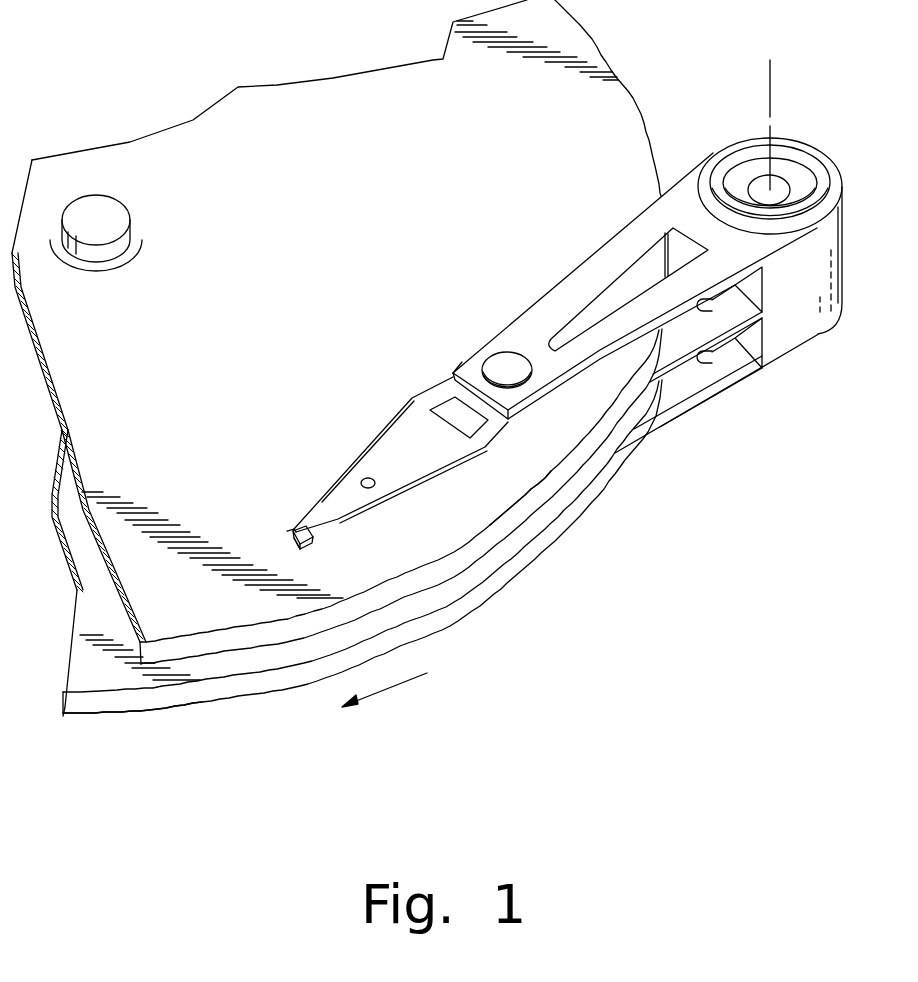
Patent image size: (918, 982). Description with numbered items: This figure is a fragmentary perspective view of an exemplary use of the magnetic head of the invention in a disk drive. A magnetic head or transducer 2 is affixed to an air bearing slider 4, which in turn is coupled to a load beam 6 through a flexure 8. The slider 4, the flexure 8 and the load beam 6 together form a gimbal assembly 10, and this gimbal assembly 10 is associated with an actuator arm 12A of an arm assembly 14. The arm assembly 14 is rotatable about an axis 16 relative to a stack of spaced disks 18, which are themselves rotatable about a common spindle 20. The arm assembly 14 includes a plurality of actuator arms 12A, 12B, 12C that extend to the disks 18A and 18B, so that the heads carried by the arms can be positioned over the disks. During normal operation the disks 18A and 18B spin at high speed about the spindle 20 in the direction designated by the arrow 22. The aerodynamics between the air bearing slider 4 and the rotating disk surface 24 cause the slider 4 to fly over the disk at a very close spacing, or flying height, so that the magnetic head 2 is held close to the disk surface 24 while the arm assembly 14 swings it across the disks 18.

The magnetic head 2 is at (293, 546).
The air bearing slider 4 is at (308, 543).
The load beam 6 is at (405, 447).
The flexure 8 is at (294, 529).
The gimbal assembly 10 is at (393, 377).
The actuator arm 12A is at (550, 293).
The actuator arm 12B is at (718, 340).
The actuator arm 12C is at (697, 413).
The arm assembly 14 is at (682, 122).
The axis 16 is at (770, 93).
The stack of spaced disks 18 is at (173, 711).
The disk 18A is at (487, 540).
The disk 18B is at (458, 603).
The spindle 20 is at (128, 208).
The arrow 22 is at (390, 690).
The disk surface 24 is at (523, 472).